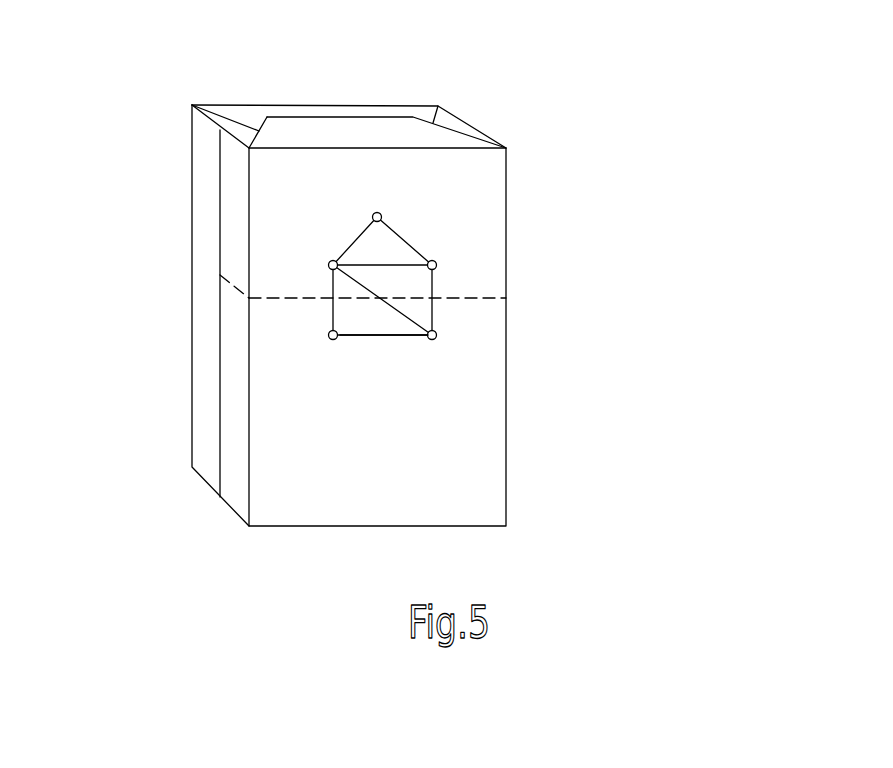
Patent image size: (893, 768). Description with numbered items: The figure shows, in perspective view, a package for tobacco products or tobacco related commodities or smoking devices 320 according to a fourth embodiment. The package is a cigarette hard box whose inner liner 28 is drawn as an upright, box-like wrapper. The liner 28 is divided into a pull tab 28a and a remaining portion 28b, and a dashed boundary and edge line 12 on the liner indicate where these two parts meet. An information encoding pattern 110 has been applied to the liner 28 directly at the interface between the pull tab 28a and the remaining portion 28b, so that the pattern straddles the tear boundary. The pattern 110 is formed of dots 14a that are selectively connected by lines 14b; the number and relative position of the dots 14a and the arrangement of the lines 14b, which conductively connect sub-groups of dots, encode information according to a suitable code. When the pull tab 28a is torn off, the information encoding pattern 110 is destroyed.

The package for tobacco products or tobacco related commodities or smoking devices 320 is at (413, 267).
The inner liner 28 is at (358, 267).
The pull tab 28a is at (477, 207).
The remaining portion of the liner 28b is at (312, 452).
The gusset / fold line 12 is at (280, 268).
The information encoding pattern 110 is at (515, 356).
The dots 14a is at (434, 339).
The lines 14b is at (385, 336).